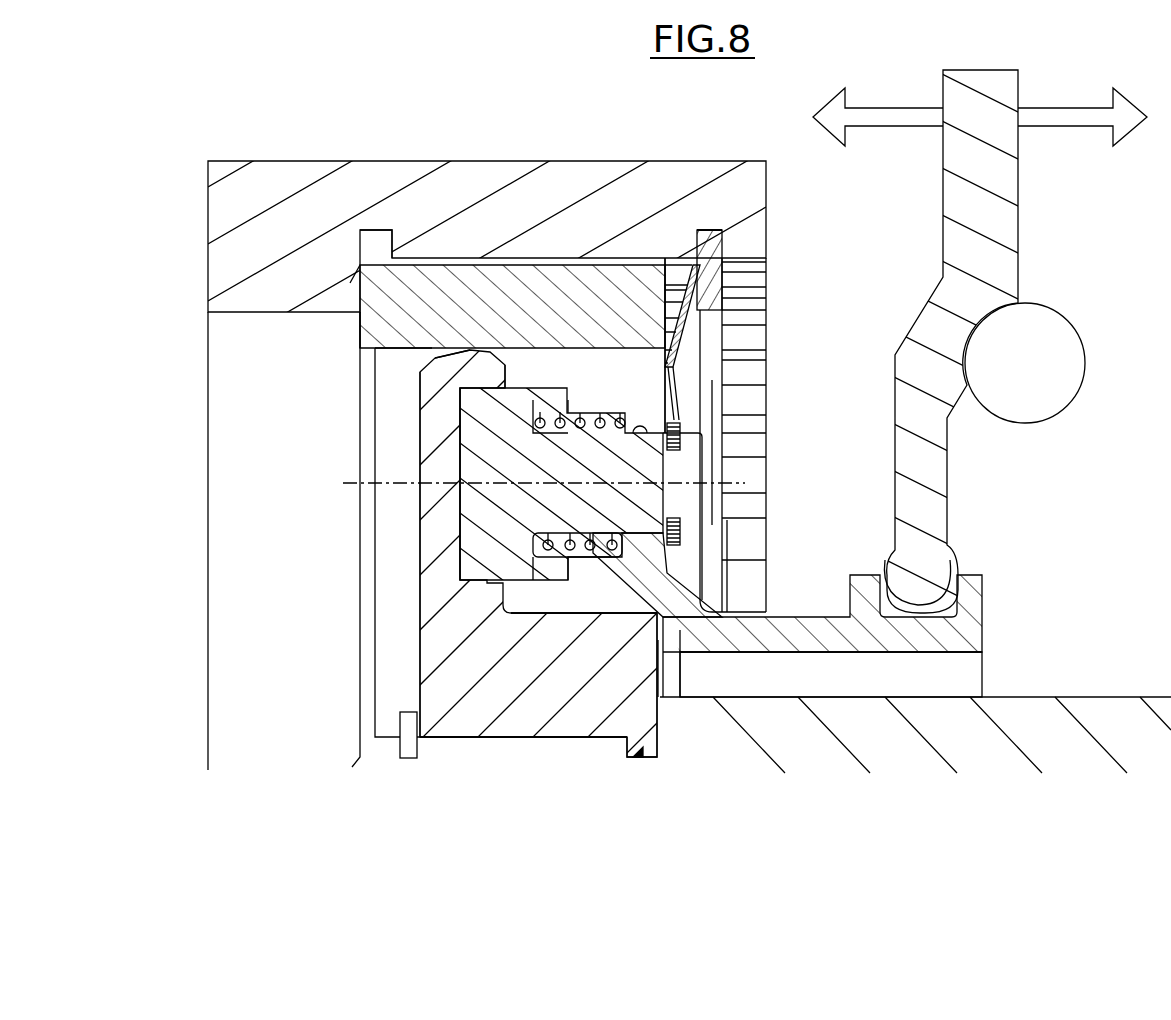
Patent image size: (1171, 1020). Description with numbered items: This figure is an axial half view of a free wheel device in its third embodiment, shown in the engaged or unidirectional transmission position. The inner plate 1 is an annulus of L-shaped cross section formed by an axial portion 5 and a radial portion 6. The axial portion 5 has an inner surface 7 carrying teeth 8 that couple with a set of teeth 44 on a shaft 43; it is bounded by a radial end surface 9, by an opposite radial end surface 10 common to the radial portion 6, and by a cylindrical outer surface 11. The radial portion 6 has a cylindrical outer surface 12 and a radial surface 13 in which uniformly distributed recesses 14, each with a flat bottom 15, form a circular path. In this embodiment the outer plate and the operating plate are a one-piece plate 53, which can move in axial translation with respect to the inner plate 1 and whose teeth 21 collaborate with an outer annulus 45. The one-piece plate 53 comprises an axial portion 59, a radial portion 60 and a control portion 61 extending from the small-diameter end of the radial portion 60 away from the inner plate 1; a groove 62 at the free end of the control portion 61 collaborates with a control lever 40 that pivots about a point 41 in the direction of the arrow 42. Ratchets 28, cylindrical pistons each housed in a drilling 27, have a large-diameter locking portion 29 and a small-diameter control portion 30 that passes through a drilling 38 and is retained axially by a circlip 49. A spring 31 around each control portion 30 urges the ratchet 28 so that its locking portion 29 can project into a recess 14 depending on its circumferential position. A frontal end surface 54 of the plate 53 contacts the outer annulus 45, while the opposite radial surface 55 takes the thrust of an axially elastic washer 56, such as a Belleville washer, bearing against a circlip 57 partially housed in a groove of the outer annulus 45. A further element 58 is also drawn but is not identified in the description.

The inner plate 1 is at (537, 682).
The axial portion 5 is at (615, 690).
The radial portion 6 is at (437, 415).
The inner surface 7 is at (485, 740).
The teeth 8 is at (632, 740).
The radial end surface 9 is at (660, 702).
The radial end surface 10 is at (420, 478).
The cylindrical outer surface 11 is at (588, 700).
The cylindrical outer surface 12 is at (440, 340).
The radial surface 13 is at (510, 367).
The recesses 14 is at (467, 383).
The flat bottom 15 is at (425, 378).
The teeth 21 is at (375, 247).
The drillings 27 is at (550, 385).
The ratchets 28 is at (578, 476).
The locking portion 29 is at (460, 458).
The control portion 30 is at (665, 505).
The spring 31 is at (610, 385).
The drillings 38 is at (663, 400).
The control lever 40 is at (1032, 74).
The point 41 is at (1035, 366).
The arrow 42 is at (884, 115).
The shaft 43 is at (1083, 685).
The set of teeth 44 is at (428, 745).
The outer annulus 45 is at (264, 150).
The circlips 49 is at (682, 425).
The one-piece plate 53 is at (995, 594).
The frontal end surface 54 is at (350, 284).
The radial surface 55 is at (700, 290).
The washer 56 is at (668, 322).
The circlip 57 is at (713, 253).
The cylinder end 58 is at (715, 240).
The axial portion 59 is at (478, 307).
The radial portion 60 is at (647, 400).
The control portion 61 is at (797, 633).
The groove 62 is at (905, 590).